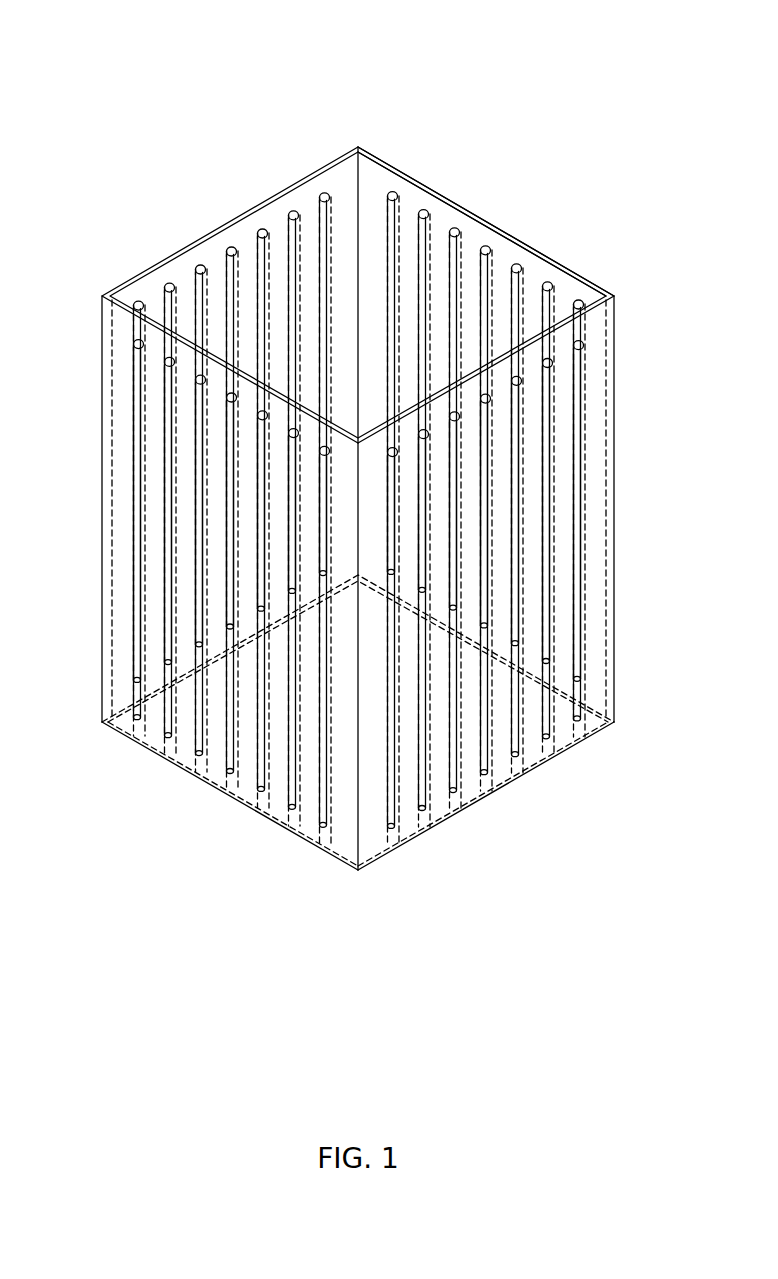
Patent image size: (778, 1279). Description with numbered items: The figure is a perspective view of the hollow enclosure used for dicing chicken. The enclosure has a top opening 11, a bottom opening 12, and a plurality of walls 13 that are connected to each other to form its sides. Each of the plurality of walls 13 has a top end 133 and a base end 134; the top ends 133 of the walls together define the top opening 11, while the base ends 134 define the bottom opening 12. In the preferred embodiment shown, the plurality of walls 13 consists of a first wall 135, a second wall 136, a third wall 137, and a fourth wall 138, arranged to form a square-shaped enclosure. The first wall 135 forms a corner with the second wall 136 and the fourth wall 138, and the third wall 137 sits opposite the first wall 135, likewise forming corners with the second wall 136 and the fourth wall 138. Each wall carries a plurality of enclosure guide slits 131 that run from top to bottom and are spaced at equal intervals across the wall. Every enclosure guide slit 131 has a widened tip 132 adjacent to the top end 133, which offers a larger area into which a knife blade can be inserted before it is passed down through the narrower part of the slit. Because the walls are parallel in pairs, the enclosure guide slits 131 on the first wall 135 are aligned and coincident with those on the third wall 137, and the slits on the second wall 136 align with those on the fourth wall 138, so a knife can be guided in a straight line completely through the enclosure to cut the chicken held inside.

The top opening 11 is at (335, 392).
The bottom opening 12 is at (345, 680).
The plurality of walls 13 is at (394, 486).
The enclosure guide slits 131 is at (402, 478).
The widened tip 132 is at (230, 252).
The top end 133 is at (100, 297).
The base end 134 is at (102, 722).
The first wall 135 is at (338, 840).
The second wall 136 is at (562, 733).
The third wall 137 is at (447, 217).
The fourth wall 138 is at (351, 168).